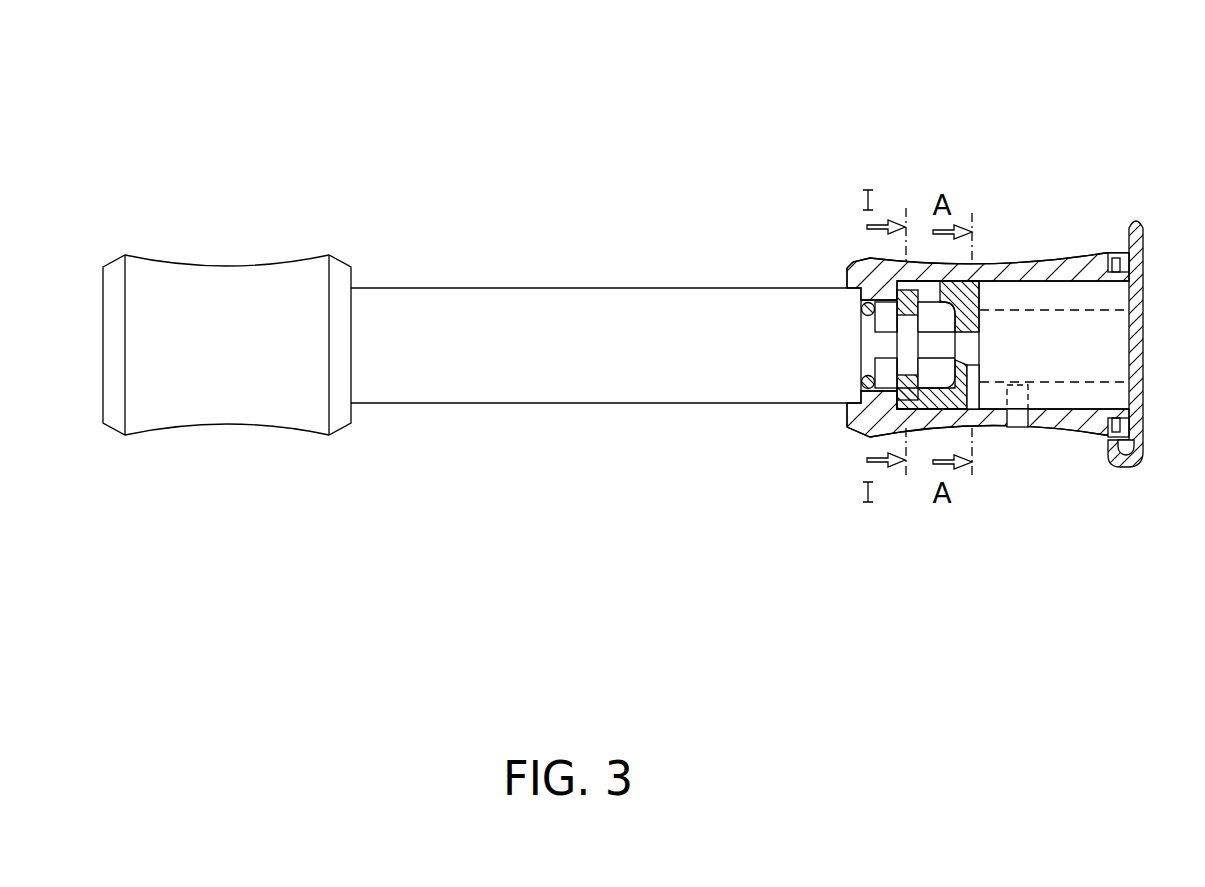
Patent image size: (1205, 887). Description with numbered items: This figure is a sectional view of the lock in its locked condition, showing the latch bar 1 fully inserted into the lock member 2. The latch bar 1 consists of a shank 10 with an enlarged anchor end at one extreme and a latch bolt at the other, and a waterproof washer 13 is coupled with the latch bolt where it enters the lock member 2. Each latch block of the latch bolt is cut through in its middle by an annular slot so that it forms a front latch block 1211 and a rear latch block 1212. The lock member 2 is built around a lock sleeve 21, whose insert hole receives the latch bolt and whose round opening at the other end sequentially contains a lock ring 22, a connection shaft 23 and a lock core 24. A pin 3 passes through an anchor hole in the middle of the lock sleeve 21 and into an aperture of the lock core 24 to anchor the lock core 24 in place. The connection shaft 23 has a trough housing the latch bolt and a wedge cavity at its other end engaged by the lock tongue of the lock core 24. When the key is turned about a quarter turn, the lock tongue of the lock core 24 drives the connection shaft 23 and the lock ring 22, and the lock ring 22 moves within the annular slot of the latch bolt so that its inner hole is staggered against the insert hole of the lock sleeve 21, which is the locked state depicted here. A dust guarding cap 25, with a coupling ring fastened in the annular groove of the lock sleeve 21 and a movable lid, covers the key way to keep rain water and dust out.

The latch bar 1 is at (472, 270).
The shank 10 is at (580, 315).
The lock member 2 is at (1080, 250).
The lock sleeve 21 is at (1052, 267).
The waterproof washer 13 is at (866, 295).
The rear latch block 1212 is at (887, 308).
The front latch block 1211 is at (932, 308).
The lock ring 22 is at (908, 390).
The connection shaft 23 is at (965, 290).
The lock core 24 is at (1062, 352).
The pin 3 is at (1017, 417).
The dust guarding cap 25 is at (1143, 320).